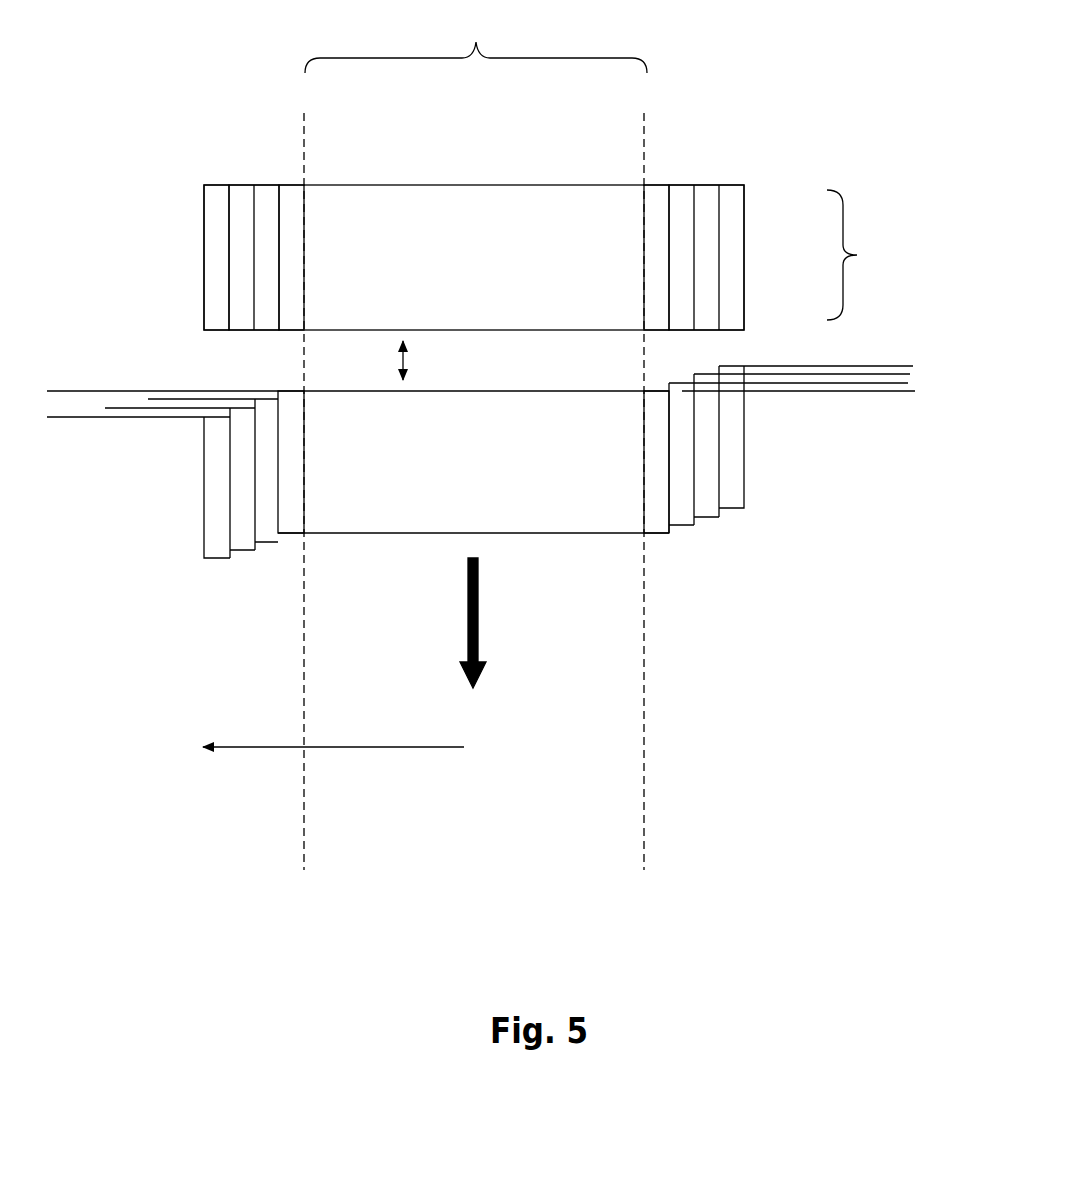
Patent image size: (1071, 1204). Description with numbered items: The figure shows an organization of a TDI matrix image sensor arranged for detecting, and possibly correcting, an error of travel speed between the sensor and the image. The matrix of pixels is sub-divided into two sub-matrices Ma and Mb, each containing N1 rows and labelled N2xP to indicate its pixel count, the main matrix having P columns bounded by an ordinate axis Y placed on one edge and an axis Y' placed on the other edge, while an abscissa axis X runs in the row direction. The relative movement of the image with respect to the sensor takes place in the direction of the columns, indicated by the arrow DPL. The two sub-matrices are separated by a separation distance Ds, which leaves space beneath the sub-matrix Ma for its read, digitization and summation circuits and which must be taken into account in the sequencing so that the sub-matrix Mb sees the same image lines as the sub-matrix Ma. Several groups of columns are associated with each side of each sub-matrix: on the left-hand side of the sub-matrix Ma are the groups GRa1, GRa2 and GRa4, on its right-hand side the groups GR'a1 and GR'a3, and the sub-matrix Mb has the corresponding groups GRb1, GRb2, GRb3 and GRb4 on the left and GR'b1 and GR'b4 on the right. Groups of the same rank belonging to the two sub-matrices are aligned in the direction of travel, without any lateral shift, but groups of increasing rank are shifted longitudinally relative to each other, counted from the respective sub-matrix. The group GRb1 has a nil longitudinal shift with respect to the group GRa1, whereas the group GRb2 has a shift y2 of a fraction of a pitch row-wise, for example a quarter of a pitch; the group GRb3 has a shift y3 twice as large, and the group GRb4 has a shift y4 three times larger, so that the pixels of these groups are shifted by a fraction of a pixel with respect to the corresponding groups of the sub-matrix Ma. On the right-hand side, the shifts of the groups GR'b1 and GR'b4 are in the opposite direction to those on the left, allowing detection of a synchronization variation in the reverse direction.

The sub-matrix Ma is at (474, 257).
The sub-matrix Mb is at (358, 462).
The group of columns GRa1 is at (291, 257).
The group of columns GRa2 is at (254, 257).
The group of columns GRa4 is at (216, 257).
The group of columns GR'a1 is at (656, 257).
The group of columns GR'a3 is at (706, 257).
The group of columns GRb1 is at (291, 462).
The group of columns GRb2 is at (213, 474).
The group of columns GRb3 is at (180, 483).
The group of columns GRb4 is at (138, 487).
The group of columns GR'b1 is at (656, 462).
The group of columns GR'b4 is at (792, 449).
The pixel count of sub-matrix N2xP is at (472, 364).
The number of columns P is at (476, 43).
The number of rows of sub-matrix N1 is at (859, 255).
The separation distance Ds is at (420, 360).
The longitudinal shift y2 is at (161, 423).
The longitudinal shift y3 is at (107, 433).
The longitudinal shift y4 is at (53, 443).
The direction of movement DPL is at (439, 623).
The abscissa axis X is at (333, 731).
The ordinate axis Y is at (308, 484).
The ordinate axis Y' is at (629, 484).